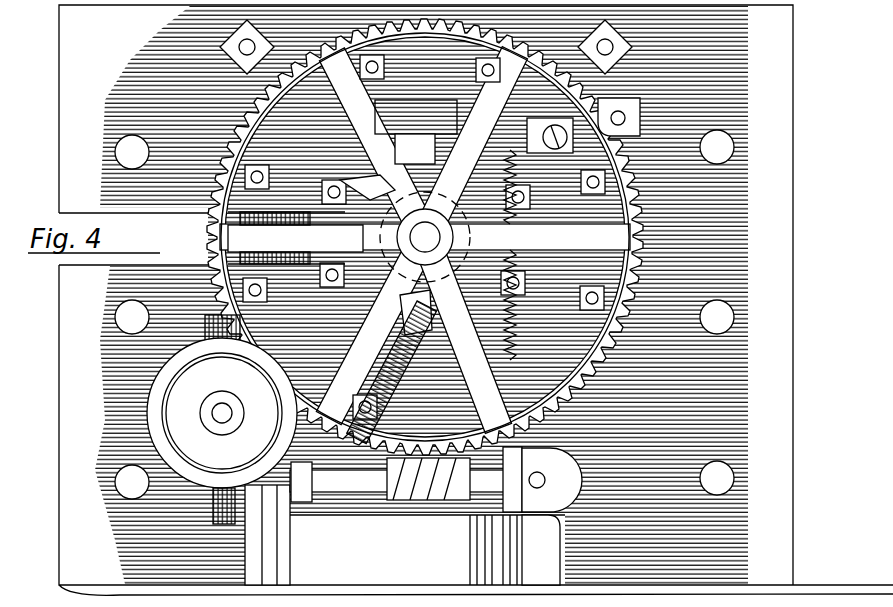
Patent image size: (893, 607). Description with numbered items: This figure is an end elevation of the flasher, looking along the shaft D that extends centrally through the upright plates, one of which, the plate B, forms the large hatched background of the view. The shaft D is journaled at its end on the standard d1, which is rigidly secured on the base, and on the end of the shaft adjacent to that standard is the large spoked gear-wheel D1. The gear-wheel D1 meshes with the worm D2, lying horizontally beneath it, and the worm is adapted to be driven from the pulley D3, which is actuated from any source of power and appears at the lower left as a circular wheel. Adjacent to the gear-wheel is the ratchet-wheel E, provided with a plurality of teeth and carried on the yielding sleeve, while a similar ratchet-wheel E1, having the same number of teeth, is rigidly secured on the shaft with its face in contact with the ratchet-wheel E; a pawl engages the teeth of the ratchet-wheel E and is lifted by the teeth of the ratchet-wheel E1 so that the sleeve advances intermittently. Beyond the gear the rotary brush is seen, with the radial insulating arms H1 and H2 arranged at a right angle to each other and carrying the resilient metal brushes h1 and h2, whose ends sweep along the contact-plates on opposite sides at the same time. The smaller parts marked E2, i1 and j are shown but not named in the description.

The plate B is at (62, 100).
The shaft D is at (426, 236).
The gear-wheel D1 is at (484, 26).
The worm D2 is at (404, 492).
The pulley D3 is at (258, 466).
The ratchet-wheel E is at (378, 180).
The ratchet-wheel E1 is at (400, 148).
The lower pawl E2 is at (416, 312).
The radial arm H1 is at (208, 265).
The radial arm H2 is at (480, 594).
The brush h1 is at (300, 182).
The brush h2 is at (295, 238).
The screw i1 is at (530, 142).
The spring j is at (514, 345).
The standard d1 is at (450, 366).